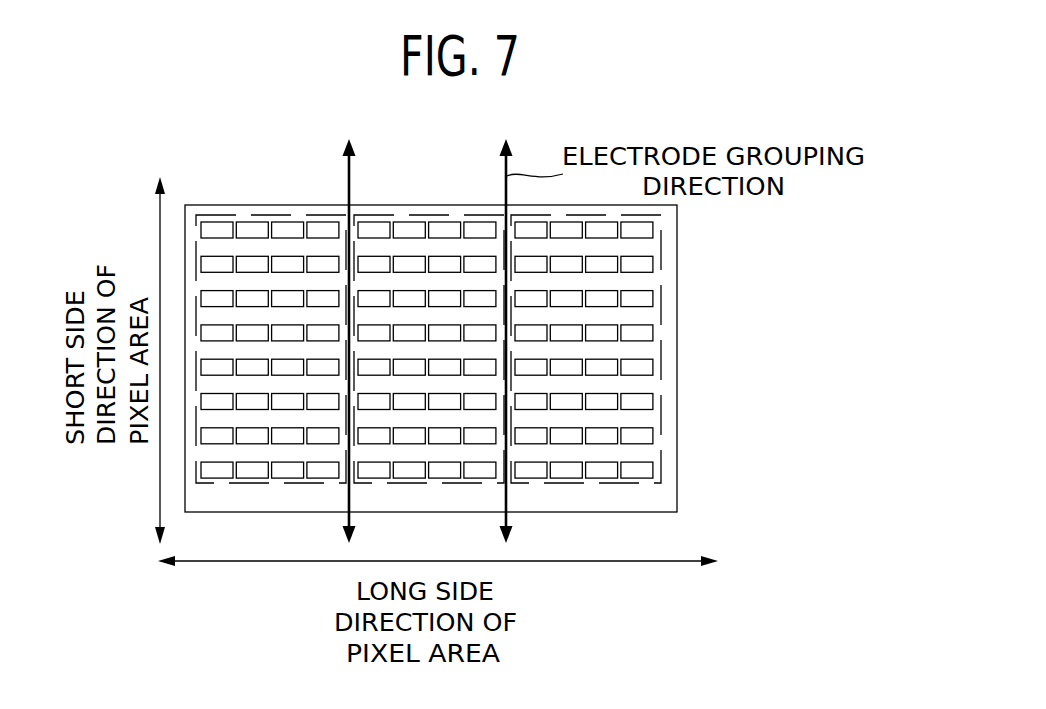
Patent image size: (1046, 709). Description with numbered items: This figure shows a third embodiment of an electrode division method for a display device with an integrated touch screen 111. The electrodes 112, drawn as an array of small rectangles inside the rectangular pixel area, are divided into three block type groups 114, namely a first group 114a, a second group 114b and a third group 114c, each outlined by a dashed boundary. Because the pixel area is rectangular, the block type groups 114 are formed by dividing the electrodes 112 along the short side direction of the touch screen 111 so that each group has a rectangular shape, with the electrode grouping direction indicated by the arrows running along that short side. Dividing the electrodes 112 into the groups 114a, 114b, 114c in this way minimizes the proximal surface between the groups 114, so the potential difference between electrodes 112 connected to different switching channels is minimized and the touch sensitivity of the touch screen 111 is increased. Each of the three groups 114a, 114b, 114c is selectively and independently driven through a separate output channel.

The touch screen 111 is at (677, 357).
The electrodes 112 is at (648, 298).
The block type groups 114 is at (487, 384).
The first group 114a is at (270, 483).
The second group 114b is at (427, 483).
The third group 114c is at (584, 483).